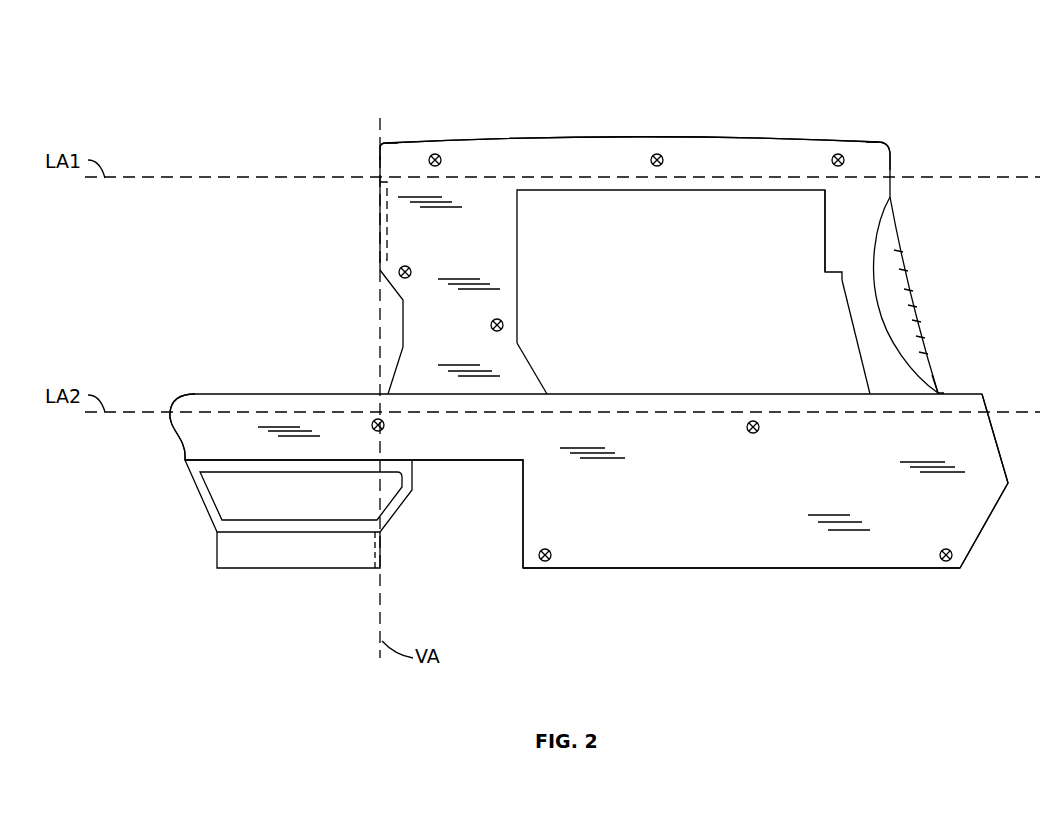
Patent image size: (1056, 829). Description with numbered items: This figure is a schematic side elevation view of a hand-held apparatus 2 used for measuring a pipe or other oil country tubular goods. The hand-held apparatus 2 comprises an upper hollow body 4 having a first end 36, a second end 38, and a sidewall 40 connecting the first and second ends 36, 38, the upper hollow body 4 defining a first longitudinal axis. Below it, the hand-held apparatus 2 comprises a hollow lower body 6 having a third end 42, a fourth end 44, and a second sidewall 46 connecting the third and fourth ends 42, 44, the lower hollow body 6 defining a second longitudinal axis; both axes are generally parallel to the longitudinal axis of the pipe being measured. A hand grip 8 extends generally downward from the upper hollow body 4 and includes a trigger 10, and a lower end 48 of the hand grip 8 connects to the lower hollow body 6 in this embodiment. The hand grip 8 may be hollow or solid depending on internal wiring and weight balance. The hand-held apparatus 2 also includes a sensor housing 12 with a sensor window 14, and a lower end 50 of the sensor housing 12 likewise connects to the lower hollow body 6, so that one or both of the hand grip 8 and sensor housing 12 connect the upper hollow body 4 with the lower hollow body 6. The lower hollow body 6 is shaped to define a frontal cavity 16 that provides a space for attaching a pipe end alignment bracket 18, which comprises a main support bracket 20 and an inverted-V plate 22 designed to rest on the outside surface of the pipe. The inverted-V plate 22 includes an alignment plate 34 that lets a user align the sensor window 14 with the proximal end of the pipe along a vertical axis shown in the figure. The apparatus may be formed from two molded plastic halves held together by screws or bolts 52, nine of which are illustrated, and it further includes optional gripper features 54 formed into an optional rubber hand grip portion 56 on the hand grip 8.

The hand-held apparatus 2 is at (902, 101).
The upper hollow body 4 is at (763, 152).
The lower hollow body 6 is at (770, 549).
The hand grip 8 is at (858, 322).
The trigger 10 is at (824, 236).
The sensor housing 12 is at (518, 250).
The sensor window 14 is at (380, 218).
The frontal cavity 16 is at (466, 463).
The pipe end alignment bracket 18 is at (200, 508).
The main support bracket 20 is at (200, 475).
The inverted-V plate 22 is at (235, 556).
The alignment plate 34 is at (368, 548).
The first end 36 is at (894, 177).
The second end 38 is at (380, 156).
The sidewall 40 is at (590, 142).
The third end 42 is at (985, 525).
The fourth end 44 is at (176, 440).
The second sidewall 46 is at (660, 517).
The lower end of hand grip 48 is at (940, 391).
The lower end of sensor housing 50 is at (535, 386).
The screws or bolts 52 is at (658, 153).
The gripper features 54 is at (907, 294).
The rubber hand grip portion 56 is at (926, 333).